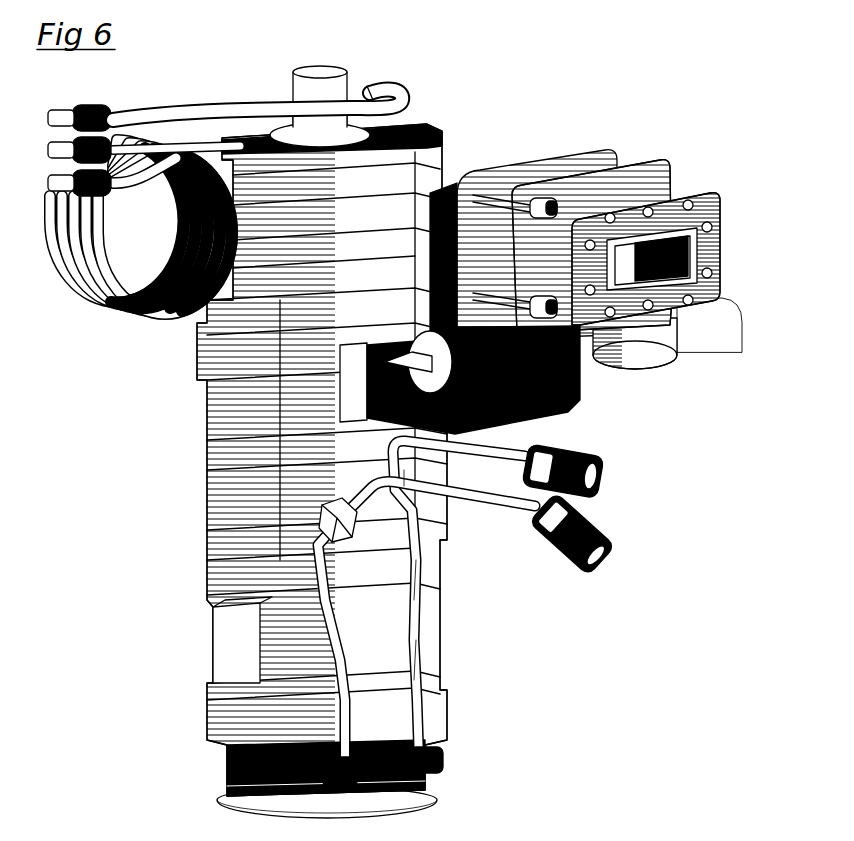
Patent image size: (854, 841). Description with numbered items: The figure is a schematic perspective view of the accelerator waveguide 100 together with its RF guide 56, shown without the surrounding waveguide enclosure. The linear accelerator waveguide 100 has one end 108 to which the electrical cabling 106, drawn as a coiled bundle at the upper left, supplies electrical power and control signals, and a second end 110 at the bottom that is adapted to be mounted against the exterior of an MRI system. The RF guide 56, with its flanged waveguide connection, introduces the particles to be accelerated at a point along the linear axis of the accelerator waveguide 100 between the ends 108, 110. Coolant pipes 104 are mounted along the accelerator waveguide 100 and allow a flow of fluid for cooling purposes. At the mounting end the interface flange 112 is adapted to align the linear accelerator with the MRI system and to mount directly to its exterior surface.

The RF guide 56 is at (563, 380).
The accelerator waveguide 100 is at (227, 635).
The coolant pipes 104 is at (340, 602).
The electrical cabling 106 is at (227, 253).
The one end 108 is at (423, 142).
The second end 110 is at (237, 790).
The interface flange 112 is at (430, 790).